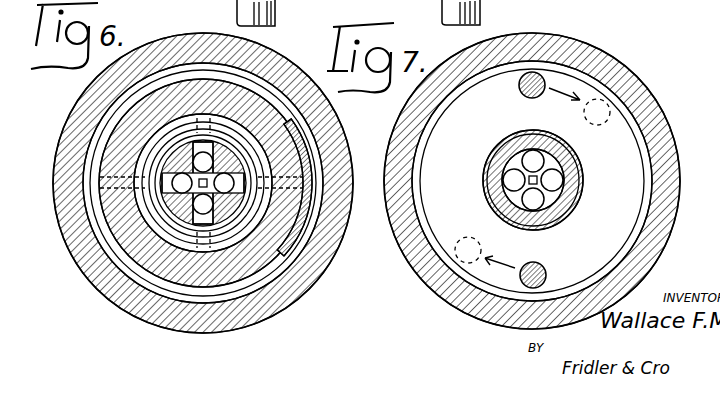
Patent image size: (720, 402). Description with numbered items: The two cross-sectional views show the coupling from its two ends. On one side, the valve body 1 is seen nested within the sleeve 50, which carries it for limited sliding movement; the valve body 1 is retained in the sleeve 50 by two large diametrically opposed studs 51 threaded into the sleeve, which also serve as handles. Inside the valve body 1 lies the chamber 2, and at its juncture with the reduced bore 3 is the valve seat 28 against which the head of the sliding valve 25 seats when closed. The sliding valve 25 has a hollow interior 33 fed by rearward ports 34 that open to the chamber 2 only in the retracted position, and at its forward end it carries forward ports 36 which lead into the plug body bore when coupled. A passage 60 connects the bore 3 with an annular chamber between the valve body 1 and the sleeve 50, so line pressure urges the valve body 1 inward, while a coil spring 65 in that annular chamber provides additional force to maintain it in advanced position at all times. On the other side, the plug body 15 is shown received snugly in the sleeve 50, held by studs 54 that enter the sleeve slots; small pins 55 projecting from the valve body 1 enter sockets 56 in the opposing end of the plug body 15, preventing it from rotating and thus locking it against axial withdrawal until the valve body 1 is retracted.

In FIG. 6, the valve body 1 is at (127, 138).
In FIG. 6, the chamber 2 is at (140, 158).
In FIG. 6, the bore 3 is at (157, 214).
In FIG. 7, the plug body 15 is at (622, 208).
In FIG. 6, the sliding valve 25 is at (178, 208).
In FIG. 7, the sliding valve 25 is at (570, 183).
In FIG. 6, the valve seat 28 is at (213, 222).
In FIG. 6, the hollow interior 33 is at (200, 207).
In FIG. 7, the hollow interior 33 is at (557, 157).
In FIG. 6, the rearward ports 34 is at (215, 143).
In FIG. 6, the forward ports 36 is at (233, 220).
In FIG. 7, the forward ports 36 is at (510, 180).
In FIG. 6, the sleeve 50 is at (317, 271).
In FIG. 7, the sleeve 50 is at (660, 228).
In FIG. 6, the studs 51 is at (236, 14).
In FIG. 7, the studs 54 is at (483, 14).
In FIG. 7, the pins 55 is at (546, 271).
In FIG. 7, the sockets 56 is at (482, 248).
In FIG. 6, the passage 60 is at (196, 116).
In FIG. 6, the coil spring 65 is at (300, 237).